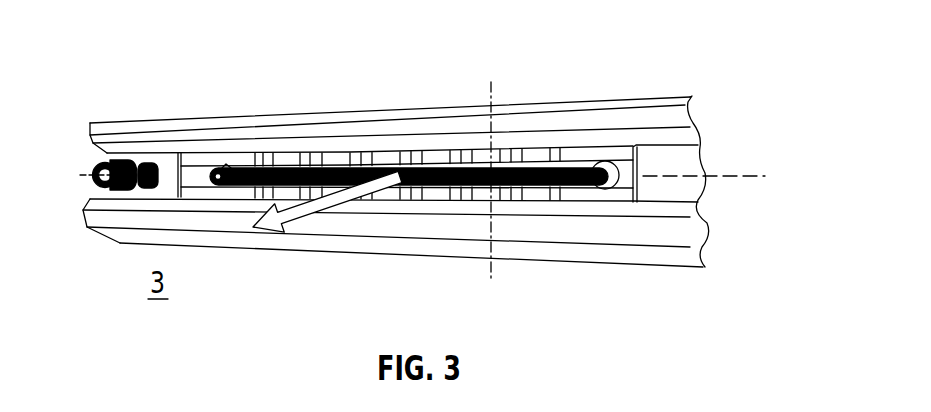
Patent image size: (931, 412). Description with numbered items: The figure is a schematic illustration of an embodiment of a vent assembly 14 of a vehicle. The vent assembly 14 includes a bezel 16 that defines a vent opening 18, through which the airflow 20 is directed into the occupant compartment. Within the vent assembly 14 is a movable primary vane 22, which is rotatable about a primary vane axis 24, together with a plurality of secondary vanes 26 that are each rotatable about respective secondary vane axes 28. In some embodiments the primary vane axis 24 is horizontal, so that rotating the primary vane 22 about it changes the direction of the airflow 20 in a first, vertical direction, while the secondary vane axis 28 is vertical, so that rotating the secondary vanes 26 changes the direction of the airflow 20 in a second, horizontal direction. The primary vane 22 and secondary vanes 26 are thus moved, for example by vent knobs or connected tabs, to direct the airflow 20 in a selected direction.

The vent assembly 14 is at (672, 55).
The bezel 16 is at (175, 125).
The vent opening 18 is at (334, 149).
The airflow 20 is at (318, 205).
The primary vane 22 is at (573, 183).
The primary vane axis 24 is at (733, 175).
The secondary vanes 26 is at (500, 152).
The secondary vane axis 28 is at (490, 88).